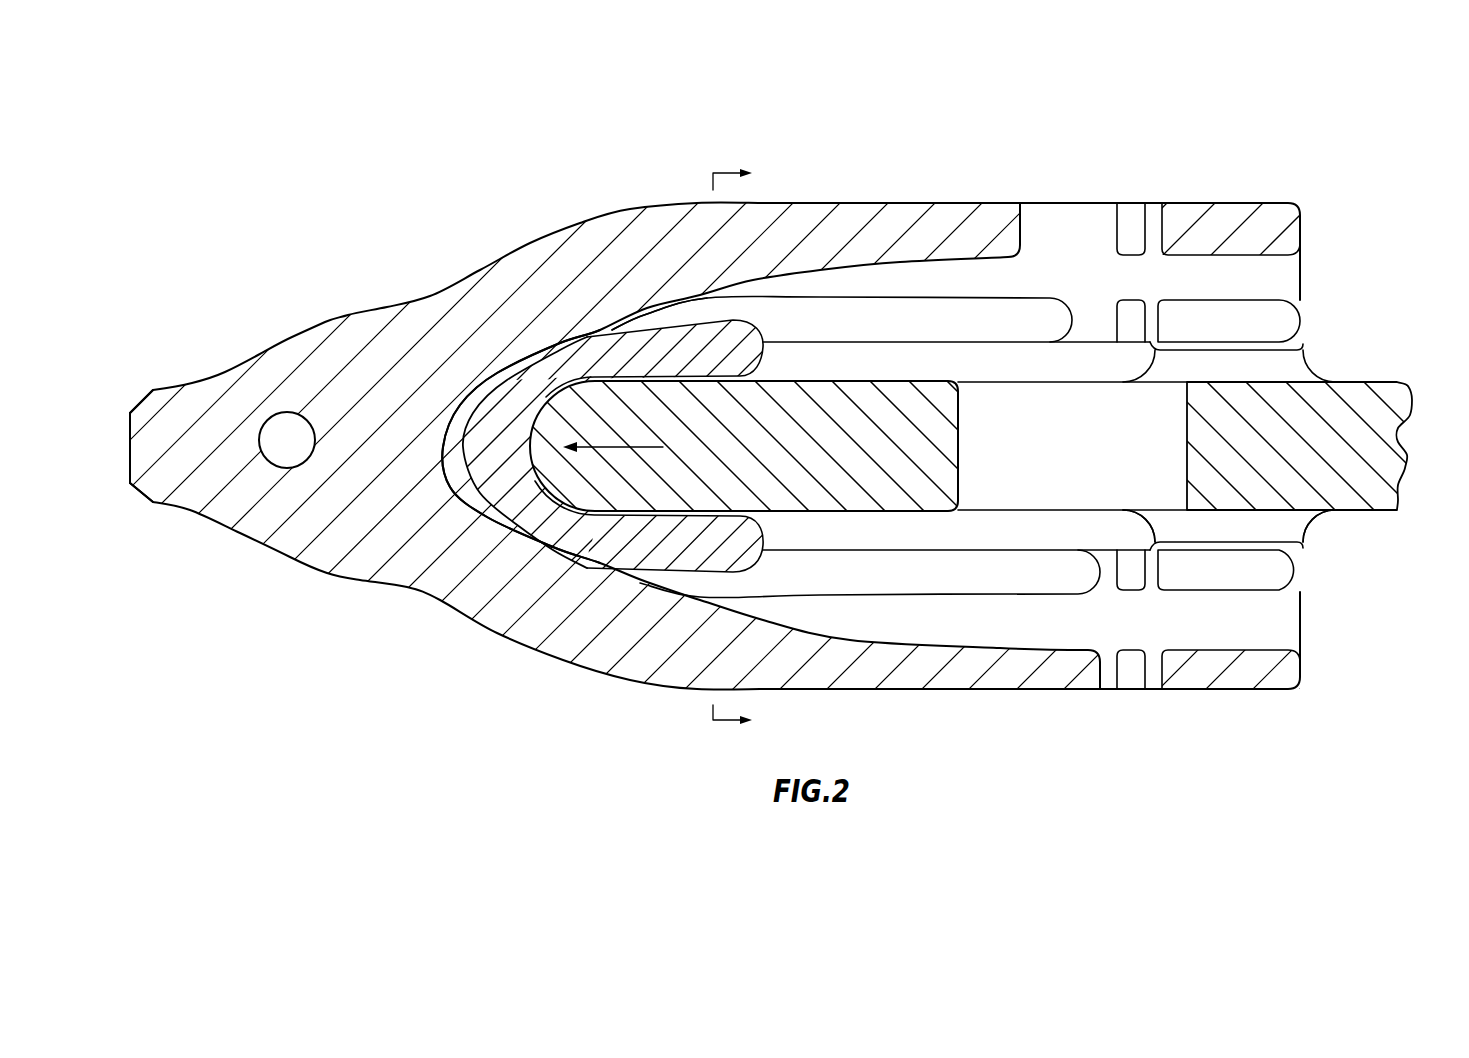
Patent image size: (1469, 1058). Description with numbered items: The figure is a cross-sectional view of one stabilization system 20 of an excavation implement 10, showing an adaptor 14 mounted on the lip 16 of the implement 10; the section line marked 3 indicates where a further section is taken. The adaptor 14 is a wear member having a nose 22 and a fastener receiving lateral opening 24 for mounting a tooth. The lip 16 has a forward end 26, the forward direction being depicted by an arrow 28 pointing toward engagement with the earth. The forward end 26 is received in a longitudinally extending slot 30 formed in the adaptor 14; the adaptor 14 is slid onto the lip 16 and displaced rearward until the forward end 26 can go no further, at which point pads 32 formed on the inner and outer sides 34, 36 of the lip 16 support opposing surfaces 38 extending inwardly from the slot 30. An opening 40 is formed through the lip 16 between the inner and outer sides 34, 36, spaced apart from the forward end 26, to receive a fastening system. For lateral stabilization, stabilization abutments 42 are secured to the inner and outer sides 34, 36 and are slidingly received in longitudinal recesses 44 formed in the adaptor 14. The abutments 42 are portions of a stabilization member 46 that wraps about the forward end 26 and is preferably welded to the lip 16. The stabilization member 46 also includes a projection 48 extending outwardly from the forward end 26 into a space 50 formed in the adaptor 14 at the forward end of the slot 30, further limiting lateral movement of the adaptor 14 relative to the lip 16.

The excavation implement 10 is at (228, 146).
The adaptor 14 is at (905, 695).
The lip 16 is at (1390, 375).
The stabilization system 20 is at (752, 258).
The nose 22 is at (193, 380).
The fastener receiving lateral opening 24 is at (272, 465).
The forward end 26 is at (528, 440).
The arrow 28 is at (616, 450).
The slot 30 is at (965, 548).
The pads 32 is at (1263, 349).
The inner side 34 is at (843, 381).
The outer side 36 is at (830, 517).
The opposing surfaces 38 is at (1193, 352).
The opening 40 is at (960, 410).
The stabilization abutments 42 is at (740, 320).
The longitudinal recesses 44 is at (830, 296).
The stabilization member 46 is at (650, 312).
The projection 48 is at (470, 480).
The space 50 is at (453, 448).
The section line 3- 3 is at (741, 448).